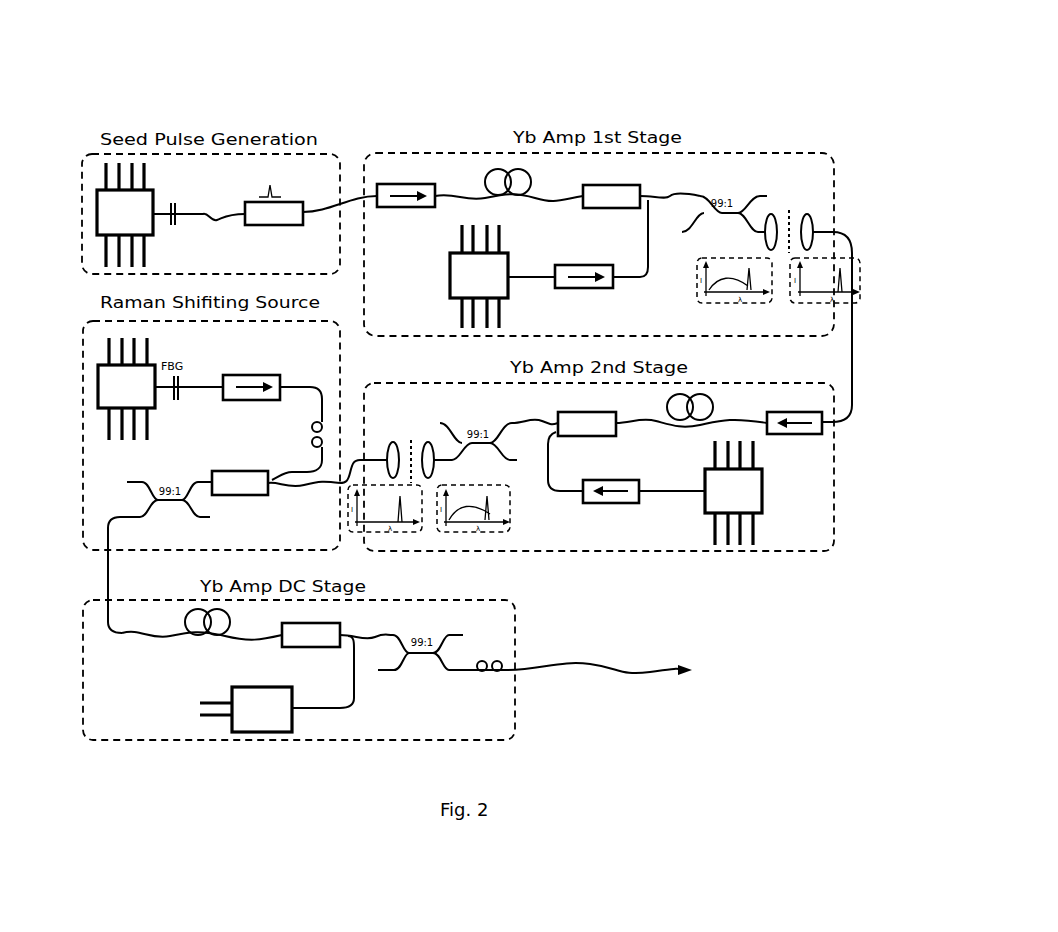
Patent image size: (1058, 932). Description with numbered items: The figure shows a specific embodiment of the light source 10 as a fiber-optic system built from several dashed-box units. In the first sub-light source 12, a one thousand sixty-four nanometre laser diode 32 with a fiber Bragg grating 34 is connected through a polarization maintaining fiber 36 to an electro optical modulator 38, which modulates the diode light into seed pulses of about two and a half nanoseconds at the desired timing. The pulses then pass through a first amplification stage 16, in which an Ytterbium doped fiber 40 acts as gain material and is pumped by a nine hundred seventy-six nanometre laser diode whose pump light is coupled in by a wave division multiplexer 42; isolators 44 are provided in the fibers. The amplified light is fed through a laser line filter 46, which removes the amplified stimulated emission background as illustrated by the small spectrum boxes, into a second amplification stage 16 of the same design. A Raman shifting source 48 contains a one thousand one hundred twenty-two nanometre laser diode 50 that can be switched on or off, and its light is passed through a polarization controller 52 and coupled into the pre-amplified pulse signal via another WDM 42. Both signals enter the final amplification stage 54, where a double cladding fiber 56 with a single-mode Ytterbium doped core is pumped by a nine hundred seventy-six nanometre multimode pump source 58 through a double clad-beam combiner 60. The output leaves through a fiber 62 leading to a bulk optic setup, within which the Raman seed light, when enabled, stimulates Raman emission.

The light source 10 is at (626, 68).
The first sub-light source 12 is at (327, 157).
The amplification stage 16 is at (428, 157).
The 1064 nm laser diode 32 is at (103, 223).
The fiber Bragg grating 34 is at (174, 226).
The polarization maintaining fiber 36 is at (203, 212).
The electro optical modulator 38 is at (300, 226).
The Ytterbium doped fiber 40 is at (532, 186).
The 976 nm laser diode / wave division multiplexer 42 is at (612, 185).
The isolator 44 is at (400, 207).
The laser line filter 46 is at (792, 172).
The Raman shifting source 48 is at (90, 346).
The 1122 nm laser diode 50 is at (150, 405).
The polarization controller 52 is at (311, 420).
The final amplification stage 54 is at (112, 725).
The double cladding fiber 56 is at (232, 618).
The 976 nm multimode pump source 58 is at (285, 730).
The double clad-beam combiner 60 is at (334, 622).
The fiber 62 is at (615, 675).